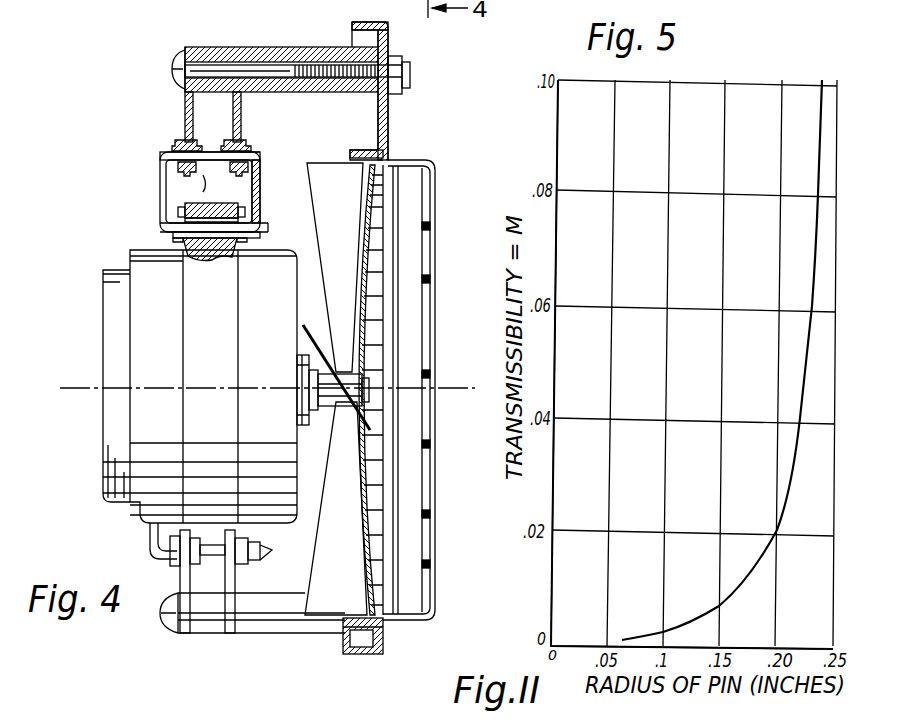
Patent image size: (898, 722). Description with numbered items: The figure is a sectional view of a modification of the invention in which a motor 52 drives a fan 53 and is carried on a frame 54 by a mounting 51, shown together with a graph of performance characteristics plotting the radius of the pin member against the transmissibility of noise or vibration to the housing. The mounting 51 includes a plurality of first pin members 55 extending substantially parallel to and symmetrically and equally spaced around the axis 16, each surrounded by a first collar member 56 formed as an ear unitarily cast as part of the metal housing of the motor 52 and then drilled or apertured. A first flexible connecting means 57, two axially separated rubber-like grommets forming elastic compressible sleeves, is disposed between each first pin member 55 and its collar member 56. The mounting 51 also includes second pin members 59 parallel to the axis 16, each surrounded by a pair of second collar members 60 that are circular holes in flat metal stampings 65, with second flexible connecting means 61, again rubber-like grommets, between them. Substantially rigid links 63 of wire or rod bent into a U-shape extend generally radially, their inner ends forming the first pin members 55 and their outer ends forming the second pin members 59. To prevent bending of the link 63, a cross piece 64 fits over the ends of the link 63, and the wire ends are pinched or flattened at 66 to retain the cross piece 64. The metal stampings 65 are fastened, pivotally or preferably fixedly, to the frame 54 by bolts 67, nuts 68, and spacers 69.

The axis 16 is at (468, 392).
The mounting 51 is at (160, 158).
The motor 52 is at (223, 375).
The fan 53 is at (358, 220).
The frame 54 is at (390, 46).
The first pin member 55 is at (220, 260).
The first collar member 56 is at (178, 212).
The first flexible connecting means 57 is at (173, 238).
The second pin member 59 is at (215, 185).
The second collar member 60 is at (196, 152).
The second flexible connecting means 61 is at (182, 148).
The rigid link 63 is at (160, 178).
The cross piece 64 is at (259, 183).
The metal stamping 65 is at (238, 47).
The pinched or flattened wire ends 66 is at (262, 156).
The bolt 67 is at (178, 60).
The nut 68 is at (404, 88).
The spacer 69 is at (280, 47).